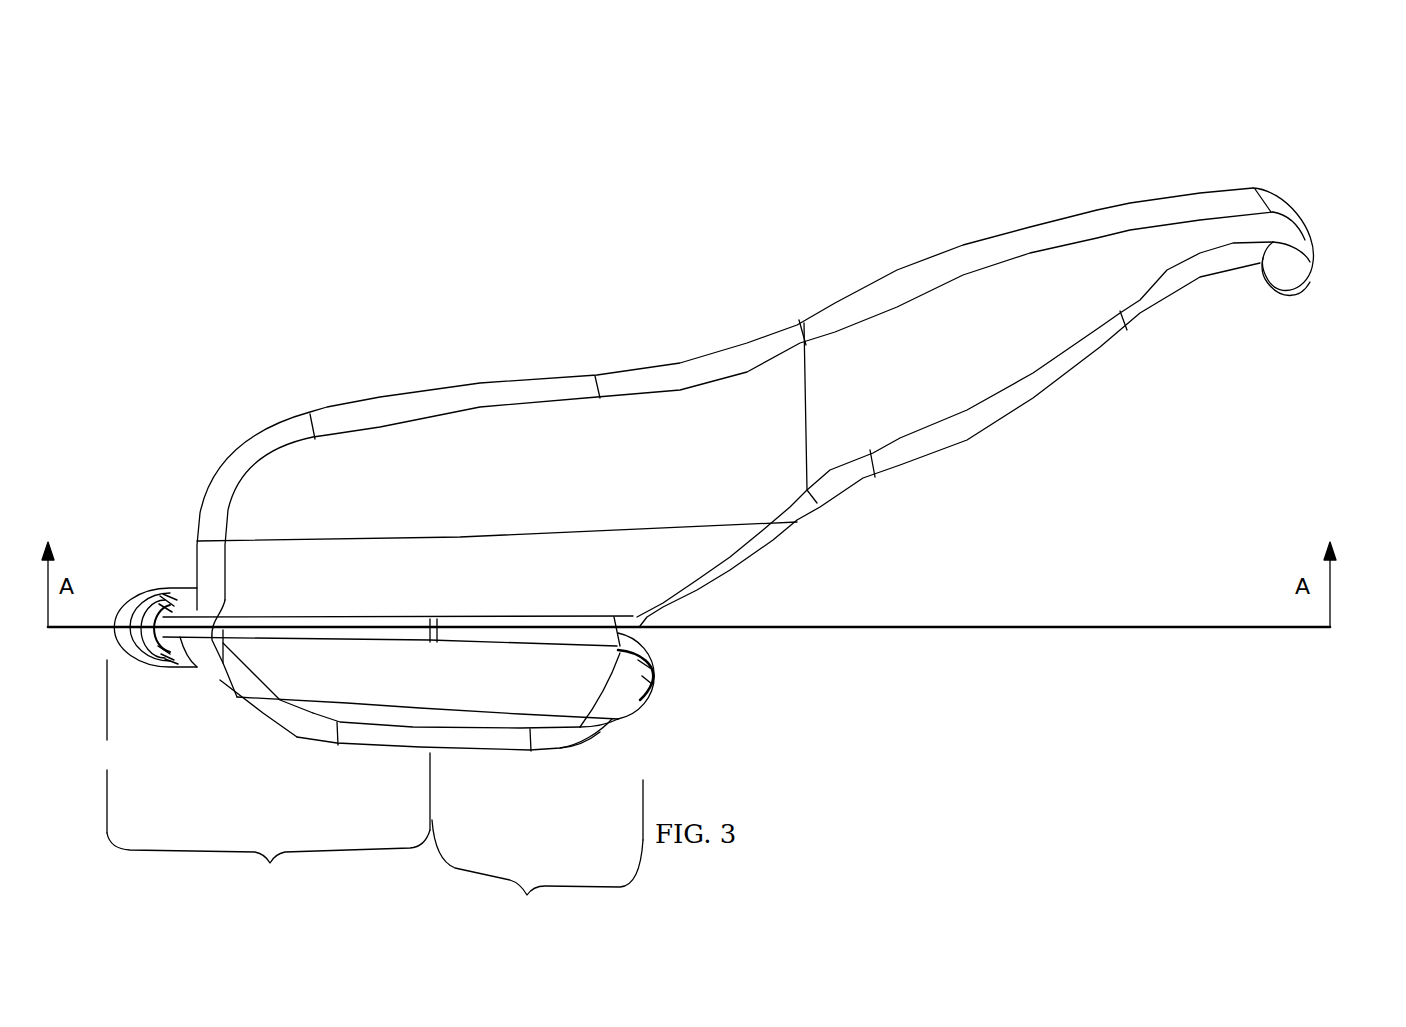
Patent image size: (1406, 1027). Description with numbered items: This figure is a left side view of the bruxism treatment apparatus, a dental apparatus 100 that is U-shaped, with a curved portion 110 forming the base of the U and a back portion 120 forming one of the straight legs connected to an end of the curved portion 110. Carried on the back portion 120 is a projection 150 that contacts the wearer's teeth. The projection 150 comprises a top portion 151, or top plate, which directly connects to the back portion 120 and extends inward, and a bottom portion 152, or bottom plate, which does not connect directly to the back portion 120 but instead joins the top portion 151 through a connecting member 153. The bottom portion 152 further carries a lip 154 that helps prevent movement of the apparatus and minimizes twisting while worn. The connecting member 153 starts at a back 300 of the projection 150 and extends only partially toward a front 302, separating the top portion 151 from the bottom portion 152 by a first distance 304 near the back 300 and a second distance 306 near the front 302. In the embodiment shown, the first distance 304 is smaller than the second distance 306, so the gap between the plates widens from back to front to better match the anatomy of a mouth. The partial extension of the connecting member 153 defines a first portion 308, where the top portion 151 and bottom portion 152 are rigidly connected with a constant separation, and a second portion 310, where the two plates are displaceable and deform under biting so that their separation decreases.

The dental apparatus 100 is at (800, 344).
The curved portion 110 is at (1313, 248).
The back portion 120 is at (447, 388).
The projection 150 is at (477, 658).
The top portion 151 is at (657, 613).
The bottom portion 152 is at (180, 662).
The connecting member 153 is at (443, 752).
The lip 154 is at (646, 722).
The back 300 is at (107, 601).
The front 302 is at (680, 643).
The first distance 304 is at (222, 666).
The second distance 306 is at (651, 690).
The first portion 308 is at (268, 787).
The second portion 310 is at (537, 864).